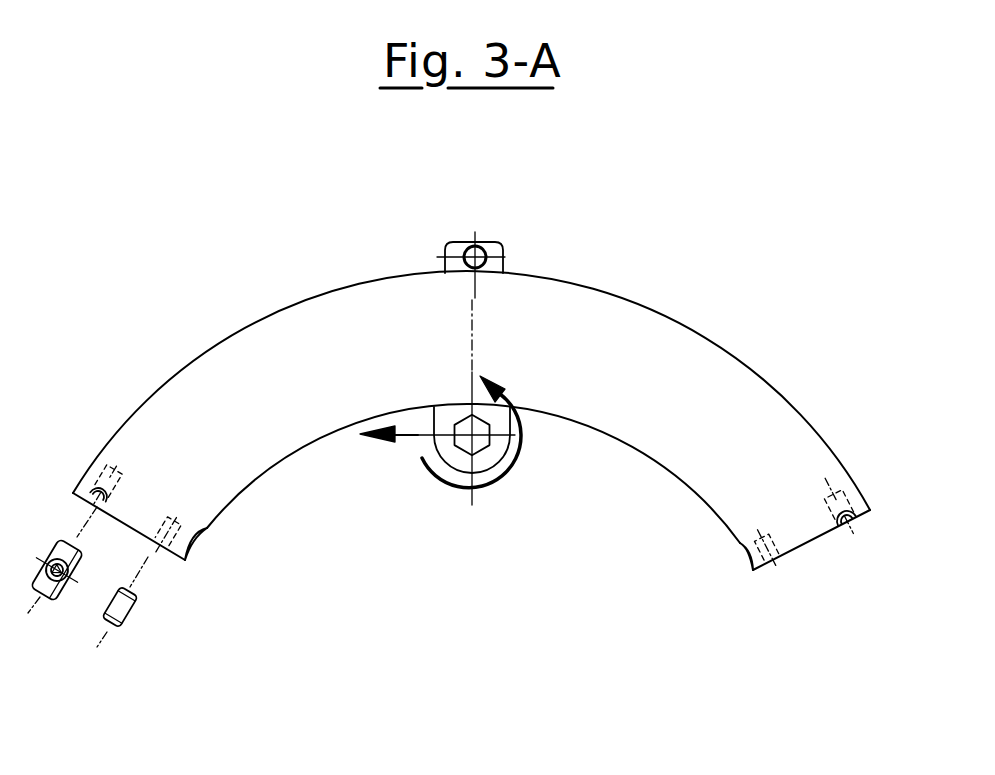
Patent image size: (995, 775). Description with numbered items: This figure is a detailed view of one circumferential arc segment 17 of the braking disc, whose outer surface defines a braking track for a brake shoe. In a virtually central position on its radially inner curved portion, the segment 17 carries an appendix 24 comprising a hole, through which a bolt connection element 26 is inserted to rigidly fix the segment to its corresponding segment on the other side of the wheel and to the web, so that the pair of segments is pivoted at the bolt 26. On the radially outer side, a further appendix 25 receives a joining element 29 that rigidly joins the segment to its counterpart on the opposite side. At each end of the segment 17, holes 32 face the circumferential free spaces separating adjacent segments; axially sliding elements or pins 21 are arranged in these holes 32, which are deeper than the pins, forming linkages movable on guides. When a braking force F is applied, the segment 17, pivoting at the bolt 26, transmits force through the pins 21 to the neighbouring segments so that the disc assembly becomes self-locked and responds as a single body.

The circumferential arc segment 17 is at (753, 367).
The axially sliding element or pin 21 is at (103, 613).
The inner appendix 24 is at (493, 457).
The radially outer appendix 25 is at (498, 242).
The bolt connection element 26 is at (460, 447).
The joining element 29 is at (458, 242).
The hole 32 is at (835, 525).
The braking force F is at (418, 437).